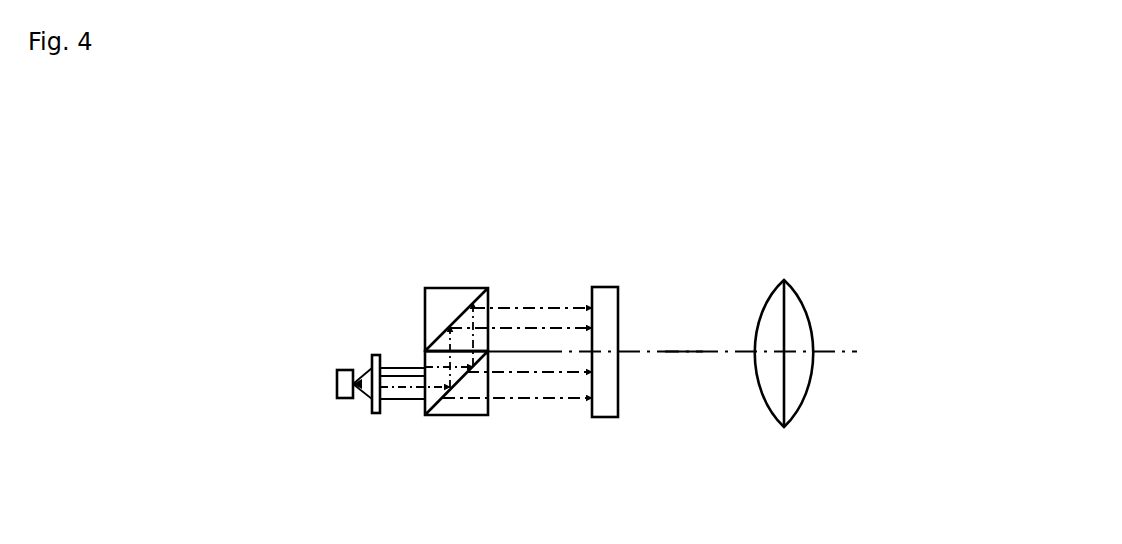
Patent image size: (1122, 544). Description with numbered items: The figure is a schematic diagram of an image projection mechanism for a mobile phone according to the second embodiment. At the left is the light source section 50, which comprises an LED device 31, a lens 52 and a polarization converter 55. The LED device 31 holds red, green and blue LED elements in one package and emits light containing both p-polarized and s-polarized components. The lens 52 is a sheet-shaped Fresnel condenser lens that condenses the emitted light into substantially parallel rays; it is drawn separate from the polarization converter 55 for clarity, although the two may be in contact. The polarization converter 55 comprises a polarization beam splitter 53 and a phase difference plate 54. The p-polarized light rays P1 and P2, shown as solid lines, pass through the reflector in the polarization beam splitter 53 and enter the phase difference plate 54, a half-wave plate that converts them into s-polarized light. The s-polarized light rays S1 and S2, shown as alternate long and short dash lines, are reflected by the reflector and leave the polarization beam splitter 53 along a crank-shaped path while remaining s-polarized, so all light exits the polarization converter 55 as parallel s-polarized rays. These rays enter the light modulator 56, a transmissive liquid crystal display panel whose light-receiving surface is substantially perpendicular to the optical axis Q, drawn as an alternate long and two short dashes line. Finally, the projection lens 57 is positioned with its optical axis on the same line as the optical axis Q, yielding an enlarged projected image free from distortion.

The light source section 50 is at (493, 164).
The LED device 31 is at (346, 370).
The lens 52 is at (375, 356).
The polarization converter 55 is at (513, 210).
The polarization beam splitter 53 is at (453, 302).
The phase difference plate 54 is at (497, 413).
The light modulator 56 is at (604, 300).
The projection lens 57 is at (784, 280).
The s-polarized light ray S1 is at (387, 355).
The s-polarized light ray S2 is at (383, 413).
The p-polarized light ray P1 is at (413, 360).
The p-polarized light ray P2 is at (413, 407).
The optical axis Q is at (672, 353).